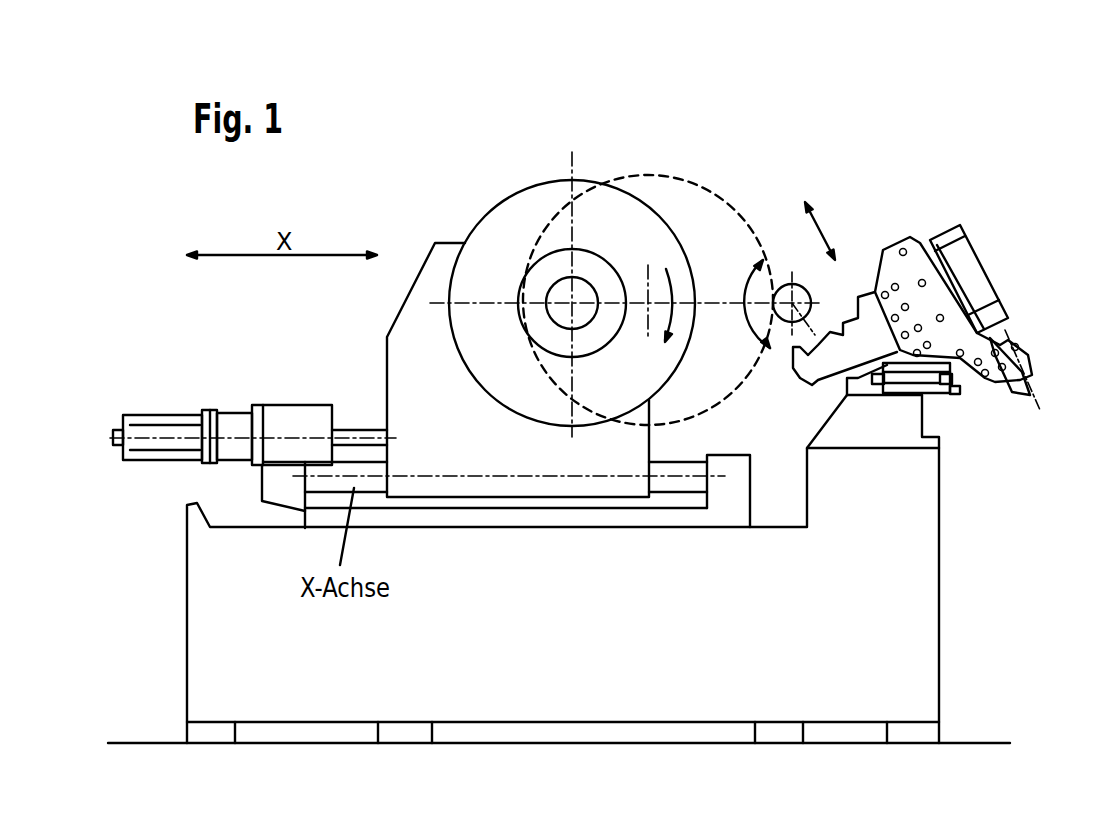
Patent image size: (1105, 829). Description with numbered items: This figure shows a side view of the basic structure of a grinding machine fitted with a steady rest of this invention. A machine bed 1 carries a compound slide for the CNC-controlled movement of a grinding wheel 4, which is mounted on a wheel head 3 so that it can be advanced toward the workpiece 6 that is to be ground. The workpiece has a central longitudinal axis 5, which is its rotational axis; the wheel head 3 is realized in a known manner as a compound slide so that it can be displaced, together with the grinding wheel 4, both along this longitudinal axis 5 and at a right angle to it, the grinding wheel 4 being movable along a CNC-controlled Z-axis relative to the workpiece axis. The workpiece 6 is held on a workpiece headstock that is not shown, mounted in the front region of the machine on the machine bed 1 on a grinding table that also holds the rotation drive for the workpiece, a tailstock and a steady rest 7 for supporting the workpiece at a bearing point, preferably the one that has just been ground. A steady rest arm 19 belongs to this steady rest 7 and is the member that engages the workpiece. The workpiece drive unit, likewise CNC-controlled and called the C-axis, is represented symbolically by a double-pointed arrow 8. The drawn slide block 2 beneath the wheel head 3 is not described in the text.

The machine bed 1 is at (567, 683).
The carriage 2 is at (723, 502).
The wheel head 3 is at (420, 383).
The grinding wheel 4 is at (510, 212).
The longitudinal axis 5 is at (810, 296).
The workpiece 6 is at (780, 281).
The steady rest 7 is at (932, 301).
The double-pointed arrow 8 is at (745, 297).
The steady rest arm 19 is at (803, 378).